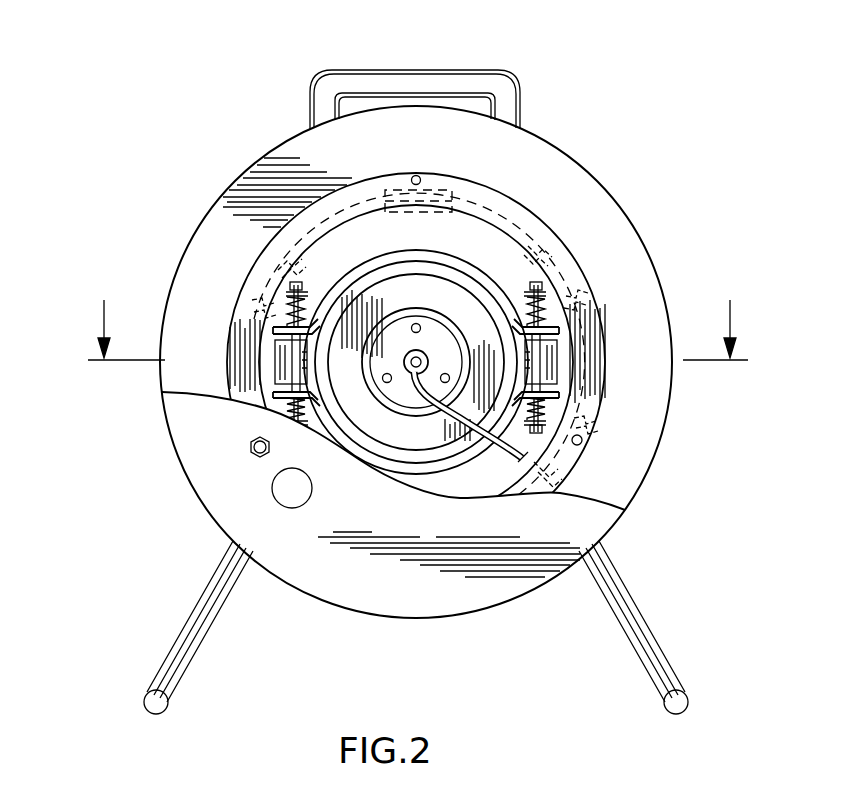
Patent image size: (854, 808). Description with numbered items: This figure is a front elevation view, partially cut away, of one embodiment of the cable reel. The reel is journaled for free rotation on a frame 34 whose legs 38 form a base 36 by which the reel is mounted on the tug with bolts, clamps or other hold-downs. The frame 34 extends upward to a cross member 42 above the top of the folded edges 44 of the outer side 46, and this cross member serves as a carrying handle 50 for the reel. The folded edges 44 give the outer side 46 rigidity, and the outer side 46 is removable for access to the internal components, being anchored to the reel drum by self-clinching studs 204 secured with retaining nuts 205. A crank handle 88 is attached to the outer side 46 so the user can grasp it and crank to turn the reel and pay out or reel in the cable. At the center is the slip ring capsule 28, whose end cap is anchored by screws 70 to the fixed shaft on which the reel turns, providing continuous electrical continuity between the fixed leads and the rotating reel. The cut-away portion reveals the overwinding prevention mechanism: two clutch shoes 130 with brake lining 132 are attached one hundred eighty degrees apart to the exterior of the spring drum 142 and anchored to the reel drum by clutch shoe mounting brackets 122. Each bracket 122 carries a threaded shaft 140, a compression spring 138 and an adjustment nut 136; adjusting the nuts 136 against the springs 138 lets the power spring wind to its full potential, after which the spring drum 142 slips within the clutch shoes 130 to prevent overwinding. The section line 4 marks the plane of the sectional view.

The section line 4- 4 is at (418, 317).
The slip ring capsule 28 is at (408, 385).
The frame 34 is at (420, 627).
The base 36 is at (148, 700).
The legs 38 is at (612, 582).
The cross member 42 is at (415, 78).
The folded edges 44 is at (590, 170).
The outer side 46 is at (520, 152).
The carrying handle 50 is at (555, 80).
The screws 70 is at (417, 324).
The crank handle 88 is at (288, 495).
The clutch shoe mounting brackets 122 is at (273, 342).
The clutch shoes 130 is at (440, 258).
The brake lining 132 is at (380, 265).
The adjustment nuts 136 is at (290, 268).
The compression springs 138 is at (289, 308).
The threaded shafts 140 is at (288, 374).
The spring drum 142 is at (491, 277).
The self-clinching studs 204 is at (583, 440).
The retaining nuts 205 is at (253, 450).